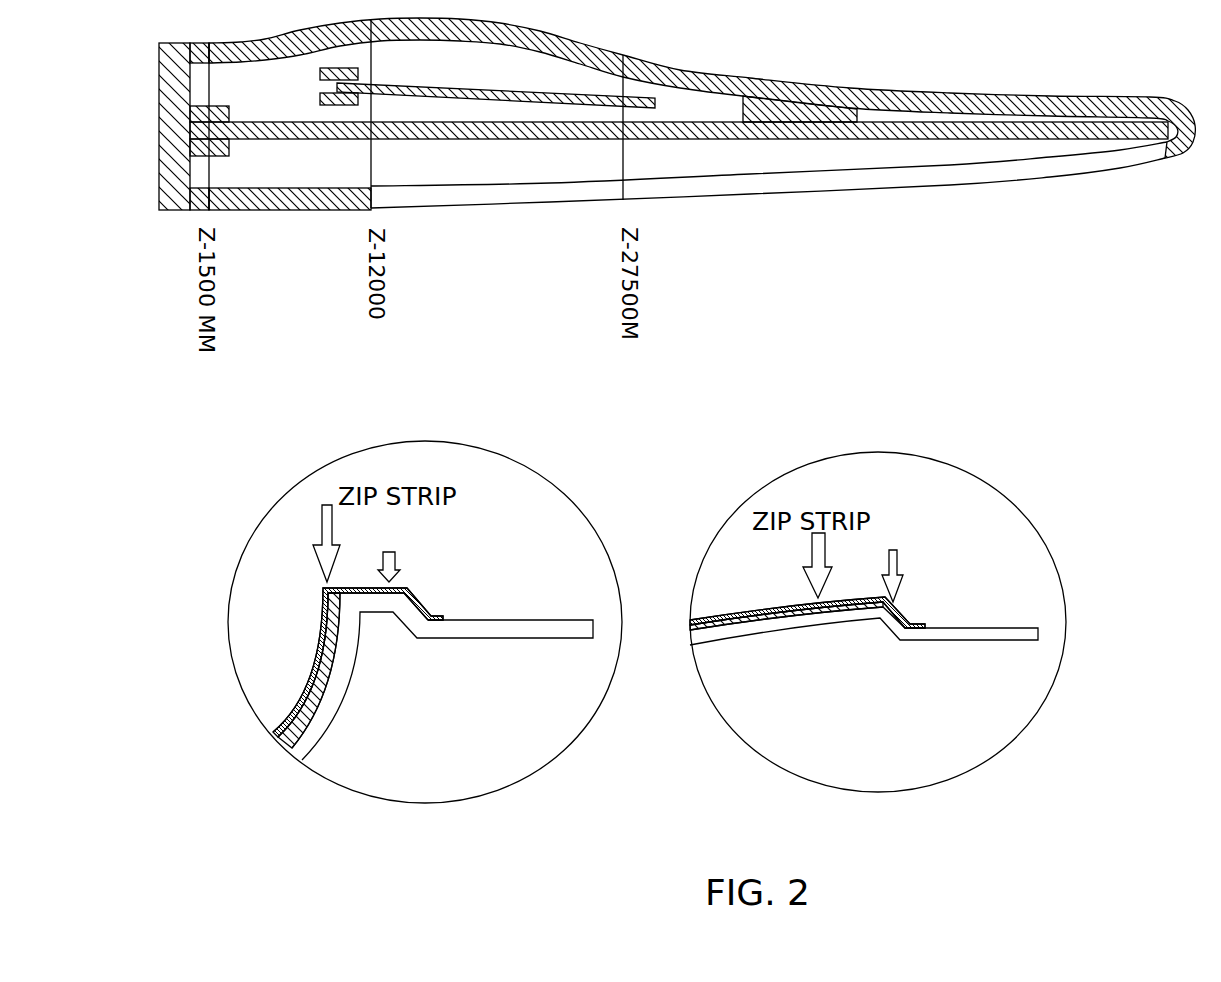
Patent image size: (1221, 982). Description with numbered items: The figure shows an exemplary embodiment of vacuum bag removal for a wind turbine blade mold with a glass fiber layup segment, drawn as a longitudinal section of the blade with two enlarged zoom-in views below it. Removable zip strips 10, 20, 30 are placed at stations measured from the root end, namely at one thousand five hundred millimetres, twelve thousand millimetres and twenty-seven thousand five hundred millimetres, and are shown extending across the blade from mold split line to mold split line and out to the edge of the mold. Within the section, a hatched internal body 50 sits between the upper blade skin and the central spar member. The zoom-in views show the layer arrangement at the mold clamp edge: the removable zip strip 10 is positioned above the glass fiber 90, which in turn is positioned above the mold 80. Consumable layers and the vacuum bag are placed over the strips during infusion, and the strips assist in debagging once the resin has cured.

The removable zip strip 10 is at (188, 225).
The removable zip strip 20 is at (355, 223).
The removable zip strip 30 is at (608, 209).
The core block 50 is at (767, 107).
The mold 80 is at (670, 664).
The glass fiber 90 is at (612, 620).